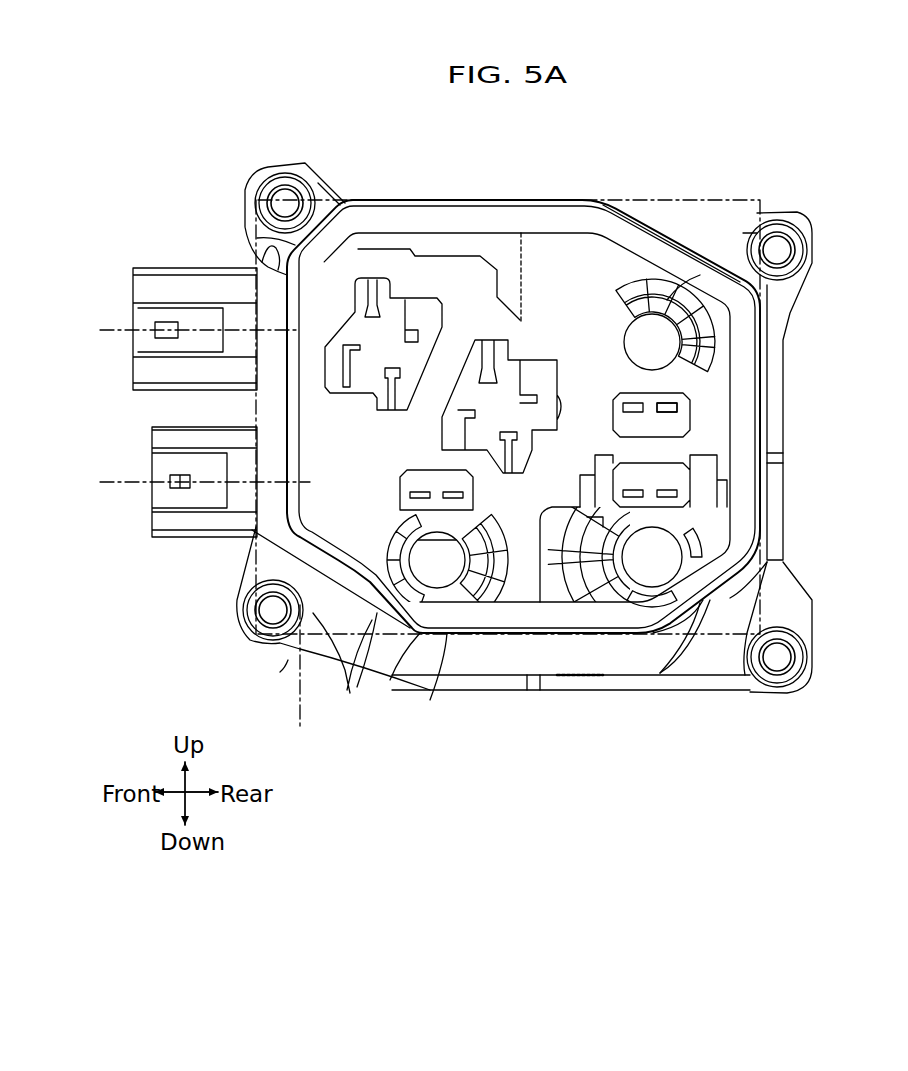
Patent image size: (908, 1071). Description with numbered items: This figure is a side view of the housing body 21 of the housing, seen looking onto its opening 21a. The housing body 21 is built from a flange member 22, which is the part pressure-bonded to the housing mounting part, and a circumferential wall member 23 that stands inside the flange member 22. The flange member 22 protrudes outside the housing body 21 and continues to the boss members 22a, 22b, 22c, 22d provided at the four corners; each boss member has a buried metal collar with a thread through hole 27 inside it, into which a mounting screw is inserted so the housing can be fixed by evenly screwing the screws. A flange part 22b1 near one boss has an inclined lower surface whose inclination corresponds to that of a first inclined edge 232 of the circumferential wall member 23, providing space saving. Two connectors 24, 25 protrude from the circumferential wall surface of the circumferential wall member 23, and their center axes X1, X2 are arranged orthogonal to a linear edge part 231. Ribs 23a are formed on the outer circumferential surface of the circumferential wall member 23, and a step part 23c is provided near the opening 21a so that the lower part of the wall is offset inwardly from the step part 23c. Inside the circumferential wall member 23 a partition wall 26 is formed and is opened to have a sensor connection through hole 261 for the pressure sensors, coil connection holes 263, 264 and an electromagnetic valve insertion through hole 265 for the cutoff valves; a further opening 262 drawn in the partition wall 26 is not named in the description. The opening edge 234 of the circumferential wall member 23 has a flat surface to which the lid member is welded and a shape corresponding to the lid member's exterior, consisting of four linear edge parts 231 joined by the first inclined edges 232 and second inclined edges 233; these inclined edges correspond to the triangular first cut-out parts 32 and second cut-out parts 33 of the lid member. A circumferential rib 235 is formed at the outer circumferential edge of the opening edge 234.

The housing body 21 is at (582, 199).
The opening 21a is at (450, 249).
The flange member 22 is at (477, 690).
The boss member 22a is at (283, 166).
The boss member 22b is at (247, 640).
The flange part 22b1 is at (288, 660).
The boss member 22c is at (800, 683).
The boss member 22d is at (790, 212).
The circumferential wall member 23 is at (627, 657).
The rib 23a is at (776, 458).
The step part 23c is at (507, 652).
The connector 24 is at (173, 268).
The connector 25 is at (185, 537).
The partition wall 26 is at (648, 330).
The thread through hole 27 is at (285, 195).
The first cut-out part 32 is at (745, 233).
The second cut-out part 33 is at (323, 183).
The linear edge part 231 is at (482, 200).
The first inclined edge 232 is at (680, 290).
The second inclined edge 233 is at (262, 240).
The opening edge 234 is at (523, 224).
The circumferential rib 235 is at (603, 200).
The sensor connection through hole 261 is at (393, 296).
The terminal holder rib 262 is at (357, 278).
The coil connection hole 263 is at (690, 420).
The coil connection hole 264 is at (667, 400).
The electromagnetic valve insertion through hole 265 is at (718, 262).
The center axis X1 is at (110, 332).
The center axis X2 is at (112, 484).